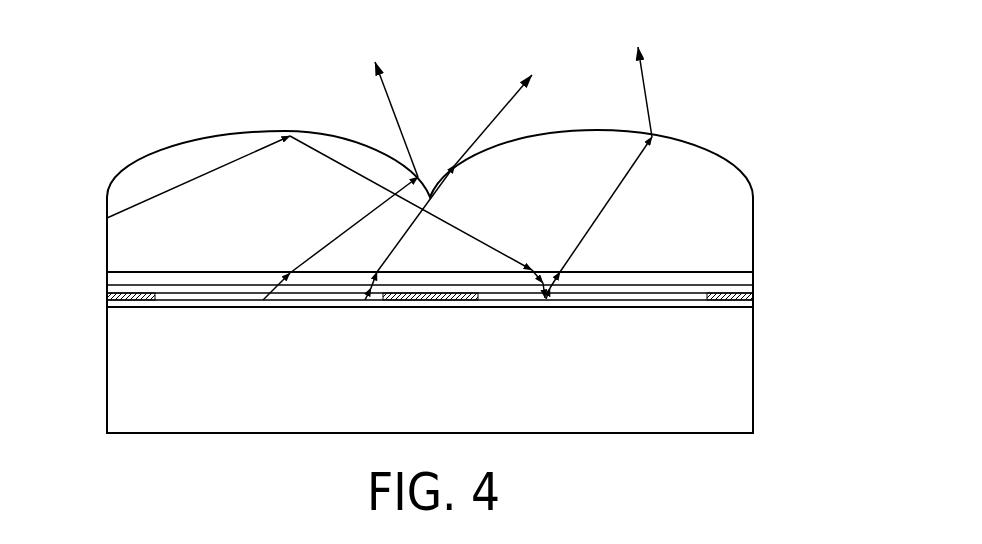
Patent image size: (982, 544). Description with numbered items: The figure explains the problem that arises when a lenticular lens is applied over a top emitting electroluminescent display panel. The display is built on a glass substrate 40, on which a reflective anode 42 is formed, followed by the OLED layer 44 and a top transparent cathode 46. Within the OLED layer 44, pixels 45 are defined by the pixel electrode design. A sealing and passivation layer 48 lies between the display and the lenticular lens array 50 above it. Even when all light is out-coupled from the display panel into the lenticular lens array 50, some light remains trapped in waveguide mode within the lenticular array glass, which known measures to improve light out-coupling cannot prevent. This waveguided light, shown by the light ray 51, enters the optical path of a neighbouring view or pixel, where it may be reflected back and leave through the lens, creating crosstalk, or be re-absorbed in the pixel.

The glass substrate 40 is at (732, 375).
The reflective anode 42 is at (107, 305).
The OLED layer 44 is at (753, 297).
The pixels 45 is at (632, 297).
The top transparent cathode 46 is at (107, 290).
The sealing and passivation layer 48 is at (753, 278).
The lenticular lens array 50 is at (143, 158).
The light ray 51 is at (228, 165).